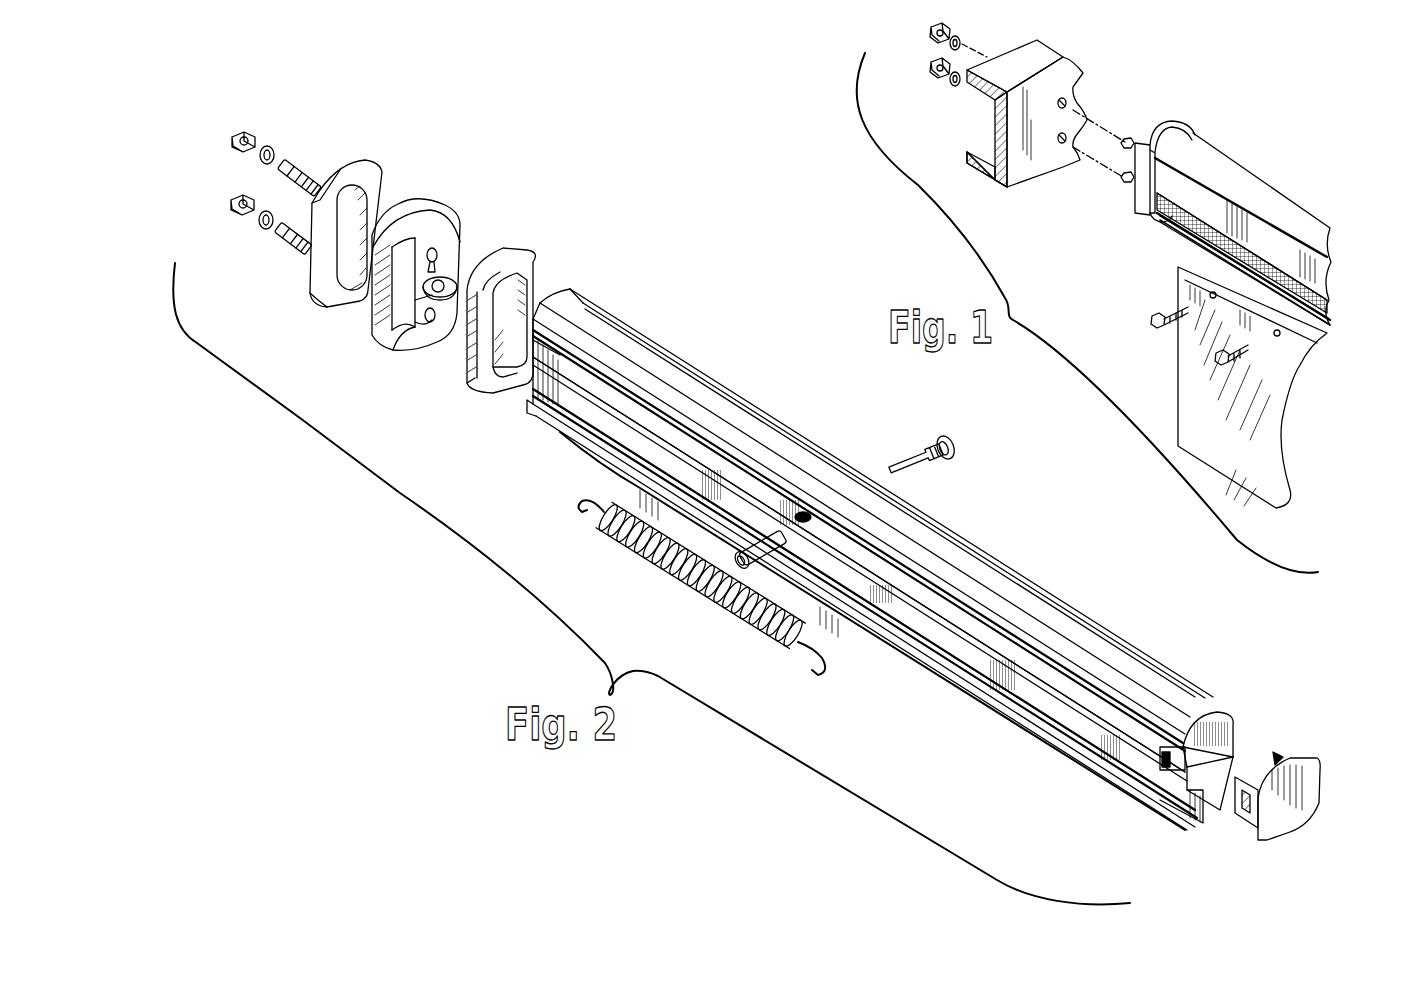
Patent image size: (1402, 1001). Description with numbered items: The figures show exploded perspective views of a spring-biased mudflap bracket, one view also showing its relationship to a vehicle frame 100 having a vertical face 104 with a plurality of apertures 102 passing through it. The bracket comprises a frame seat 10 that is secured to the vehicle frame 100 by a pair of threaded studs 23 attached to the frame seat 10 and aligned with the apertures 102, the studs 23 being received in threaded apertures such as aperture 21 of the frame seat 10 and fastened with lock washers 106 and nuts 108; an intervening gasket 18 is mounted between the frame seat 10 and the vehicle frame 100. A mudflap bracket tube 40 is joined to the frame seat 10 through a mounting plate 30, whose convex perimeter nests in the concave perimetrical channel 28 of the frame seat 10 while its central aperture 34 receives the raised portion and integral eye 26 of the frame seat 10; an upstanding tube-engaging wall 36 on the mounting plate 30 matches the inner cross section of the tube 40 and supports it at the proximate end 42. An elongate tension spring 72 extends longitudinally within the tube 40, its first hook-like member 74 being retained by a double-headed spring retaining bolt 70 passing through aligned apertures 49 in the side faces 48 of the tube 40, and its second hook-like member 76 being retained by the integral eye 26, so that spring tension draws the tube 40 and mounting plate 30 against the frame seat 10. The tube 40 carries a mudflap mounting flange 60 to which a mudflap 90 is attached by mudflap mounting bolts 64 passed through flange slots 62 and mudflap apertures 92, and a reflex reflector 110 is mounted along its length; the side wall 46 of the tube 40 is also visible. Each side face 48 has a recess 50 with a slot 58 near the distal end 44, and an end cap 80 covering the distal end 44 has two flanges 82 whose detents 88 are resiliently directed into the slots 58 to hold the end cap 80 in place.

In FIG. 1, the frame seat 10 is at (1180, 122).
In FIG. 2, the frame seat 10 is at (437, 200).
In FIG. 2, the gasket 18 is at (382, 172).
In FIG. 2, the threaded aperture 21 is at (448, 280).
In FIG. 1, the threaded stud 23 is at (1133, 140).
In FIG. 2, the threaded stud 23 is at (307, 168).
In FIG. 2, the integral eye 26 is at (417, 327).
In FIG. 2, the concave perimetrical channel 28 is at (383, 343).
In FIG. 1, the mounting plate 30 is at (1195, 132).
In FIG. 2, the mounting plate 30 is at (527, 250).
In FIG. 2, the central aperture 34 is at (508, 317).
In FIG. 2, the tube-engaging wall 36 is at (470, 362).
In FIG. 1, the mudflap bracket tube 40 is at (1262, 178).
In FIG. 2, the mudflap bracket tube 40 is at (770, 410).
In FIG. 2, the proximate end 42 is at (576, 296).
In FIG. 2, the distal end 44 is at (1230, 710).
In FIG. 2, the rail side wall 46 is at (1000, 590).
In FIG. 2, the side face 48 is at (546, 347).
In FIG. 2, the aperture 49 is at (803, 513).
In FIG. 2, the recess 50 is at (1077, 710).
In FIG. 2, the slot 58 is at (1173, 747).
In FIG. 1, the mudflap mounting flange 60 is at (1316, 316).
In FIG. 2, the mudflap mounting flange 60 is at (1197, 820).
In FIG. 1, the mudflap mounting flange slot 62 is at (1311, 322).
In FIG. 2, the mudflap mounting flange slot 62 is at (1153, 783).
In FIG. 1, the mudflap mounting bolt 64 is at (1152, 320).
In FIG. 2, the spring retaining bolt 70 is at (927, 457).
In FIG. 2, the elongate tension spring 72 is at (747, 620).
In FIG. 2, the first hook-like member 74 is at (820, 663).
In FIG. 2, the second hook-like member 76 is at (580, 508).
In FIG. 2, the end cap 80 is at (1323, 788).
In FIG. 2, the flange 82 is at (1250, 827).
In FIG. 2, the detent 88 is at (1242, 812).
In FIG. 1, the mudflap 90 is at (1188, 378).
In FIG. 1, the mudflap aperture 92 is at (1243, 279).
In FIG. 1, the vehicle frame 100 is at (1047, 63).
In FIG. 1, the aperture 102 is at (1067, 136).
In FIG. 1, the vertical face 104 is at (1017, 168).
In FIG. 1, the lock washer 106 is at (950, 83).
In FIG. 2, the lock washer 106 is at (276, 145).
In FIG. 1, the nut 108 is at (935, 70).
In FIG. 2, the nut 108 is at (246, 127).
In FIG. 1, the reflex reflector 110 is at (1197, 238).